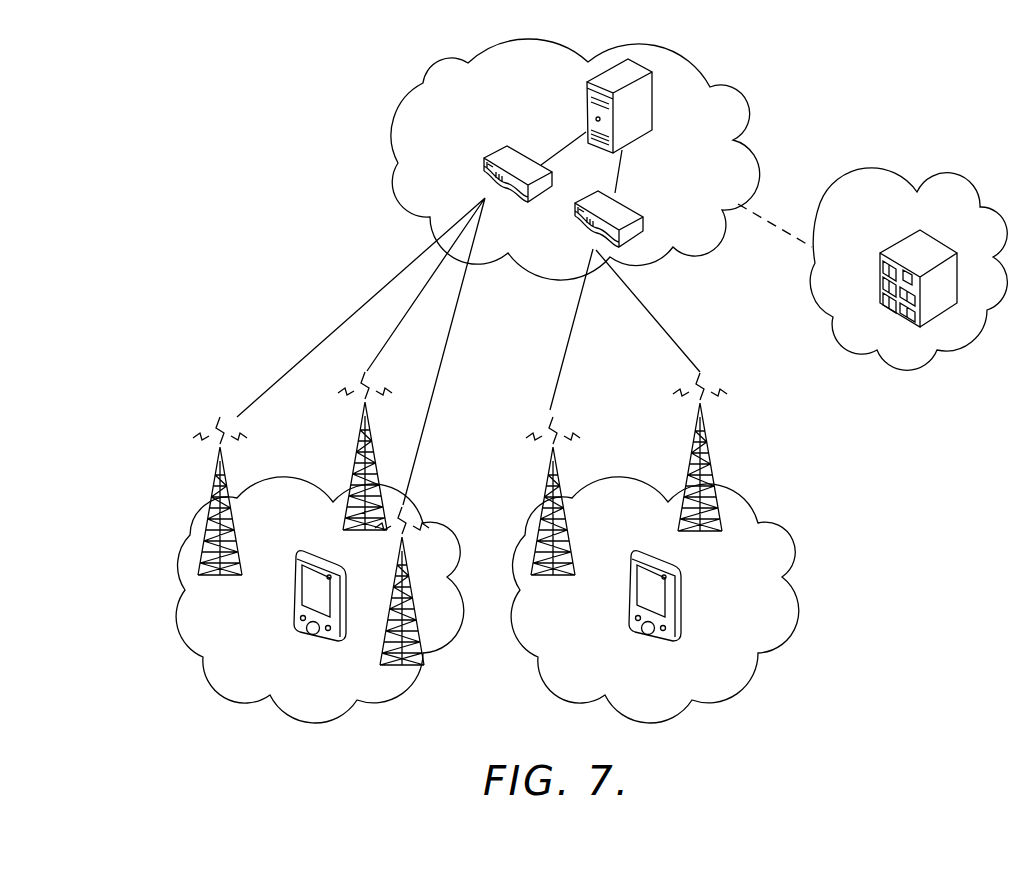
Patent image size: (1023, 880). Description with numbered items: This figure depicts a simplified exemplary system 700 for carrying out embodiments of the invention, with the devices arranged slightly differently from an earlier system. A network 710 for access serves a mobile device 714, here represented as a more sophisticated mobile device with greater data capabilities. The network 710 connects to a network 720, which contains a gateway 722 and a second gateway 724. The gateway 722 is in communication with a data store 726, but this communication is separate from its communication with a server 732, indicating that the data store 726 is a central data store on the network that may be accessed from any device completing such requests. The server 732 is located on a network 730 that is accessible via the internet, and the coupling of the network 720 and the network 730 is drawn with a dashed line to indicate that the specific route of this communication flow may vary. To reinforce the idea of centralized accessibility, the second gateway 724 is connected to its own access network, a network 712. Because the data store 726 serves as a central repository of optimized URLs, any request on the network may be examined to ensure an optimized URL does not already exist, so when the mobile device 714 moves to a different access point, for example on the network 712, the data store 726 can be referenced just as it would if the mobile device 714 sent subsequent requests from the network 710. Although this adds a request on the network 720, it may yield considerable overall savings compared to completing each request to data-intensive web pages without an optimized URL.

The system 700 is at (167, 110).
The network 710 is at (388, 704).
The network 712 is at (723, 704).
The mobile device 714 is at (320, 549).
The network 720 is at (423, 83).
The gateway 722 is at (487, 156).
The second gateway 724 is at (637, 206).
The data store 726 is at (646, 138).
The network 730 is at (876, 172).
The server 732 is at (897, 248).